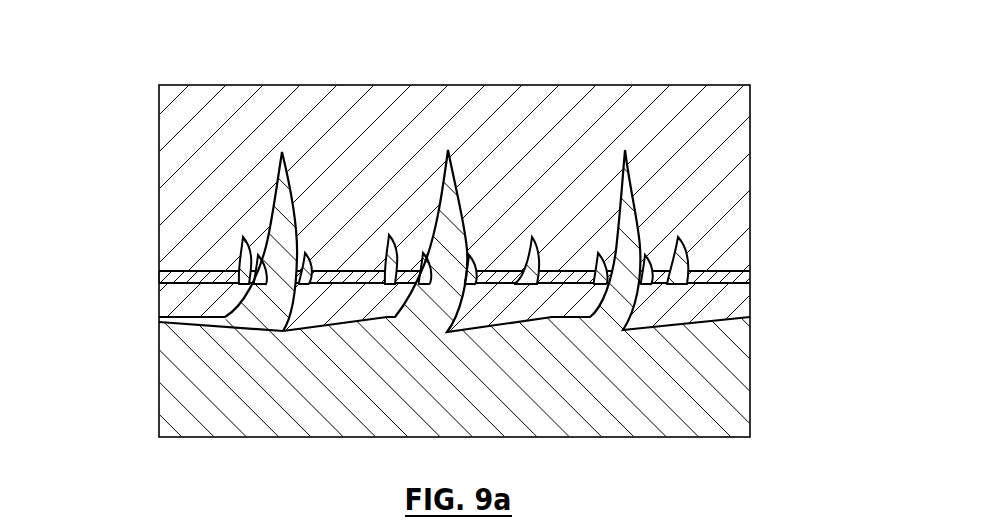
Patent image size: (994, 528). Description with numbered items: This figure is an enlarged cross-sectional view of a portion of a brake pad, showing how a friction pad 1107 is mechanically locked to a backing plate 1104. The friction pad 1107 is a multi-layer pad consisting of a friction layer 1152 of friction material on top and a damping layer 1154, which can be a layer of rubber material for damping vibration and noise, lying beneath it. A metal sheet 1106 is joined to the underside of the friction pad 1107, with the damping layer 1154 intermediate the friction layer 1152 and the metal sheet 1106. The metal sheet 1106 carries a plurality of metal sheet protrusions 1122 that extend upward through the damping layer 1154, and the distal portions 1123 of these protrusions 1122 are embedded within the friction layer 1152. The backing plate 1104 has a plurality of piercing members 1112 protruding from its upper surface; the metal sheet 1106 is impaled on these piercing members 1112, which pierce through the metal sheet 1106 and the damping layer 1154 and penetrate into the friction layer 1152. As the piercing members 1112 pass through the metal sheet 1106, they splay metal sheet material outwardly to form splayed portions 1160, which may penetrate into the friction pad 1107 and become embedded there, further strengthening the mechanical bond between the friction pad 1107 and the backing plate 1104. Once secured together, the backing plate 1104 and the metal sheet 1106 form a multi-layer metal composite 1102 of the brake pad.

The multi-layer metal composite 1102 is at (813, 283).
The backing plate 1104 is at (494, 227).
The metal sheet 1106 is at (728, 302).
The friction pad 1107 is at (102, 223).
The piercing members 1112 is at (453, 247).
The metal sheet protrusions 1122 is at (380, 268).
The distal portions 1123 is at (243, 237).
The friction layer 1152 is at (168, 195).
The damping layer 1154 is at (165, 278).
The splayed portions 1160 is at (605, 277).